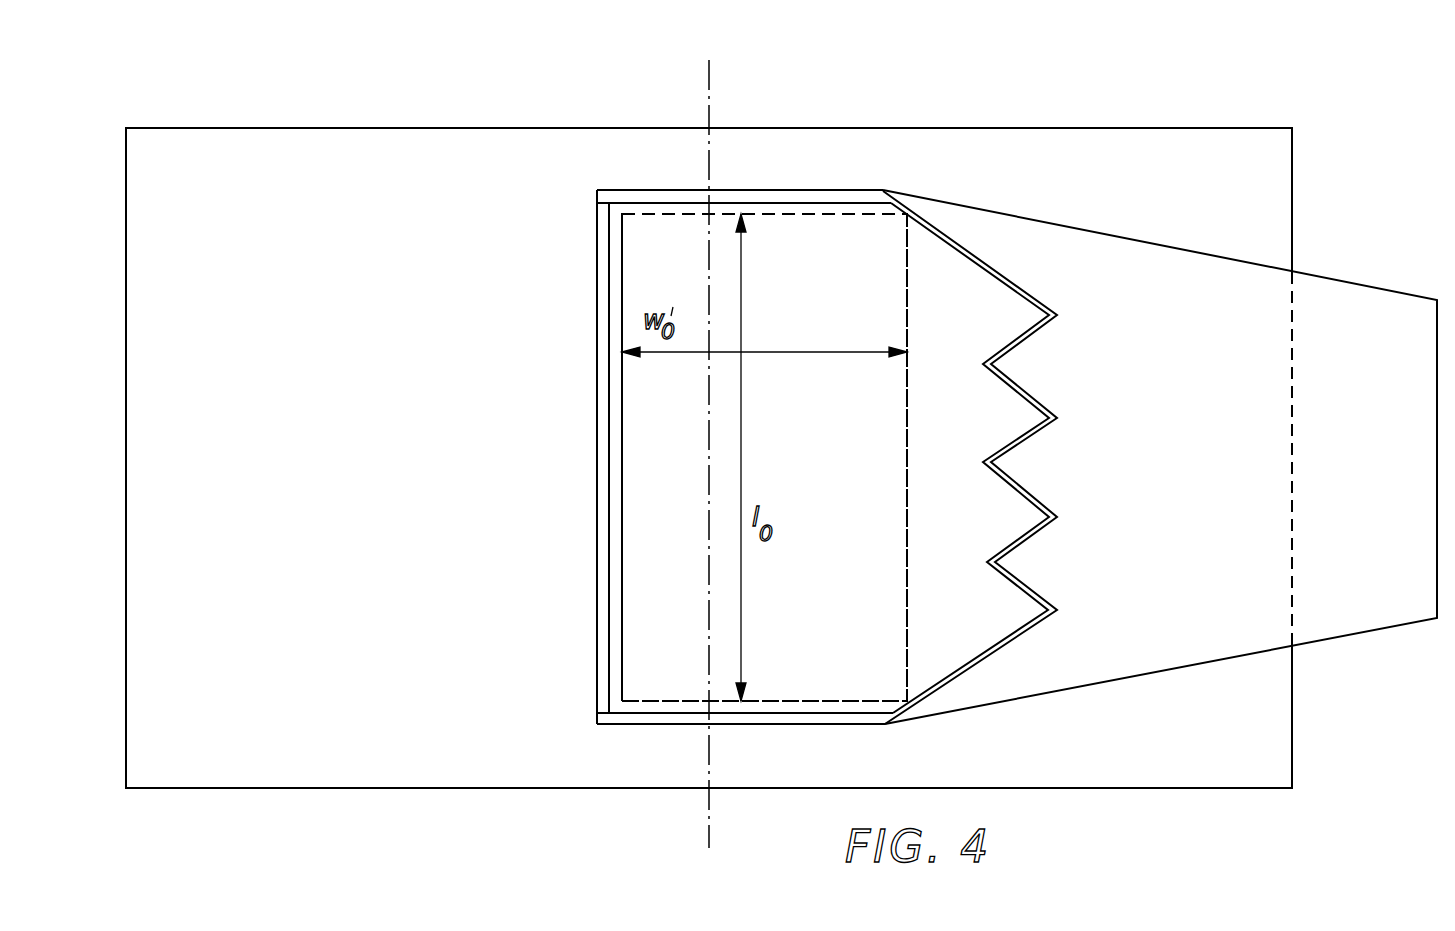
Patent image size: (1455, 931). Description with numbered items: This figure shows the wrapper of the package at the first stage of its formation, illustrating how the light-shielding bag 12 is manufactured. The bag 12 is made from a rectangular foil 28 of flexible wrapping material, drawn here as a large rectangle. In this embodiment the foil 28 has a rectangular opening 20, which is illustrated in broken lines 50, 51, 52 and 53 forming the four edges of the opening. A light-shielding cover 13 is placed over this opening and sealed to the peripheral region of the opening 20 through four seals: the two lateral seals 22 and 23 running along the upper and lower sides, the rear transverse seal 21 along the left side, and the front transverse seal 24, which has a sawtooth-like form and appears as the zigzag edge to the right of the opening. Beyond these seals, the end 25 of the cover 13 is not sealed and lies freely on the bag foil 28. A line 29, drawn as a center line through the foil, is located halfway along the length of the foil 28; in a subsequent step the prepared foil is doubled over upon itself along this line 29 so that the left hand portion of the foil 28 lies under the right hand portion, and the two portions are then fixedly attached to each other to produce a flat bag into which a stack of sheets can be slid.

The bag 12 is at (571, 129).
The light-shielding cover 13 is at (996, 211).
The rectangular opening 20 is at (830, 441).
The rear transverse seal 21 is at (597, 437).
The lateral seal 22 is at (781, 200).
The lateral seal 23 is at (806, 725).
The front transverse seal 24 is at (1040, 397).
The end of the cover 25 is at (1275, 313).
The rectangular foil 28 is at (297, 418).
The fold line 29 is at (706, 823).
The broken line of the opening 50 is at (797, 222).
The broken line of the opening 51 is at (623, 476).
The broken line of the opening 52 is at (798, 700).
The broken line of the opening 53 is at (905, 518).